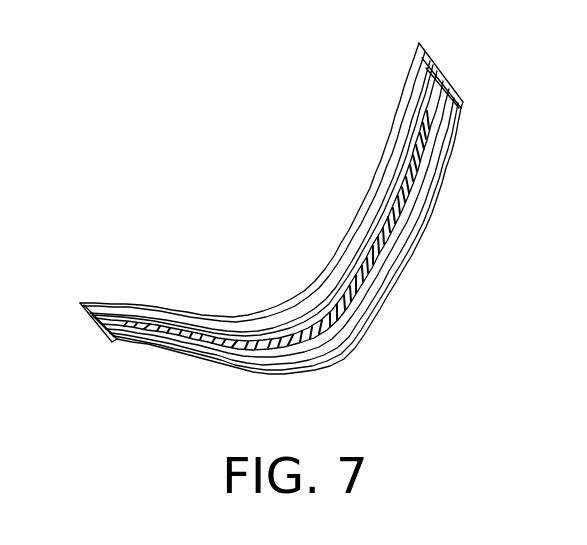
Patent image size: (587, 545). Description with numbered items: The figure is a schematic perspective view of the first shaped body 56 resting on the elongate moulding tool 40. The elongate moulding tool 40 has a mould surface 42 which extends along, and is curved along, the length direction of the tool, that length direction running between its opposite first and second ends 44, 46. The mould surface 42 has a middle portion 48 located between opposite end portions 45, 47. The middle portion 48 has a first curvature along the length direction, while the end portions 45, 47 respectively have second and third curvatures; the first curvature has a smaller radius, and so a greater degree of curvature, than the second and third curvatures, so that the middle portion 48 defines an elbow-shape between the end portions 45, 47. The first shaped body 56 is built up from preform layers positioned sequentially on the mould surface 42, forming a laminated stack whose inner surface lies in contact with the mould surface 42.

The elongate moulding tool 40 is at (391, 134).
The mould surface 42 is at (283, 312).
The first end 44 is at (441, 72).
The end portion 45 is at (441, 167).
The second end 46 is at (95, 326).
The end portion 47 is at (157, 340).
The middle portion 48 is at (330, 365).
The first shaped body 56 is at (368, 272).